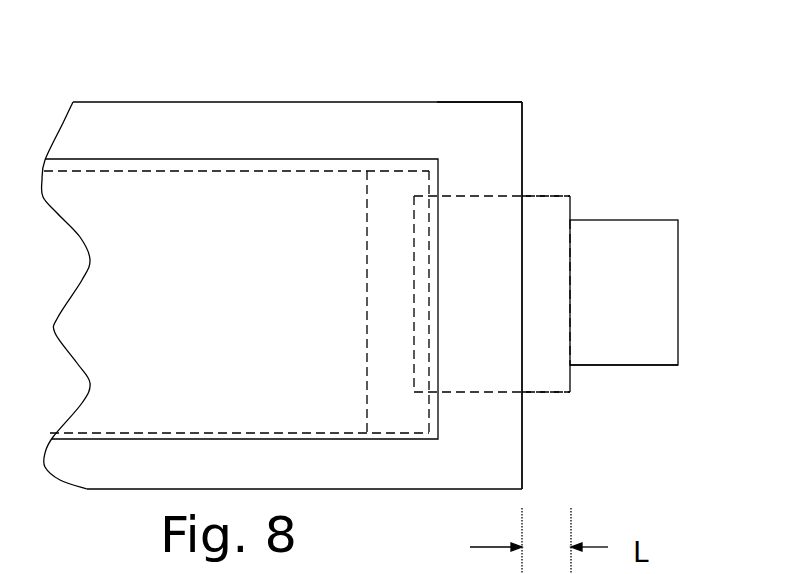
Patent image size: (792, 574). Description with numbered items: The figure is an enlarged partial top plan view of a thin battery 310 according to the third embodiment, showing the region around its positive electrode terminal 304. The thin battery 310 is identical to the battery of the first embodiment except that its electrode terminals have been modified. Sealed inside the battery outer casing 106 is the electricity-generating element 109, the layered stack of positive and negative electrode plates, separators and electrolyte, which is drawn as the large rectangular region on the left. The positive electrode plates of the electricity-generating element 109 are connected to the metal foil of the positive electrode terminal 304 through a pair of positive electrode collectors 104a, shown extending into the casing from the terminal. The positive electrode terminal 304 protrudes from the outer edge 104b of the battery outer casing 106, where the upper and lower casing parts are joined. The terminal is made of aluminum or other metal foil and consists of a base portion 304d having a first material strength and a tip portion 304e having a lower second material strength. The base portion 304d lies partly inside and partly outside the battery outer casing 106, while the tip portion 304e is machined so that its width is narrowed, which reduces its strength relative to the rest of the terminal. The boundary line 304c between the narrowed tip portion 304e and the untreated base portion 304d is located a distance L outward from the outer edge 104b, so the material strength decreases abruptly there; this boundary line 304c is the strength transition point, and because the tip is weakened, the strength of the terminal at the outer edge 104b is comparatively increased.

The battery outer casing 106 is at (248, 133).
The electricity-generating element 109 is at (122, 228).
The positive electrode collectors 104a is at (393, 290).
The outer edge 104b is at (532, 168).
The thin battery 310 is at (516, 62).
The positive electrode terminal 304 is at (655, 282).
The boundary line 304c is at (580, 278).
The base portion 304d is at (553, 350).
The tip portion 304e is at (640, 350).